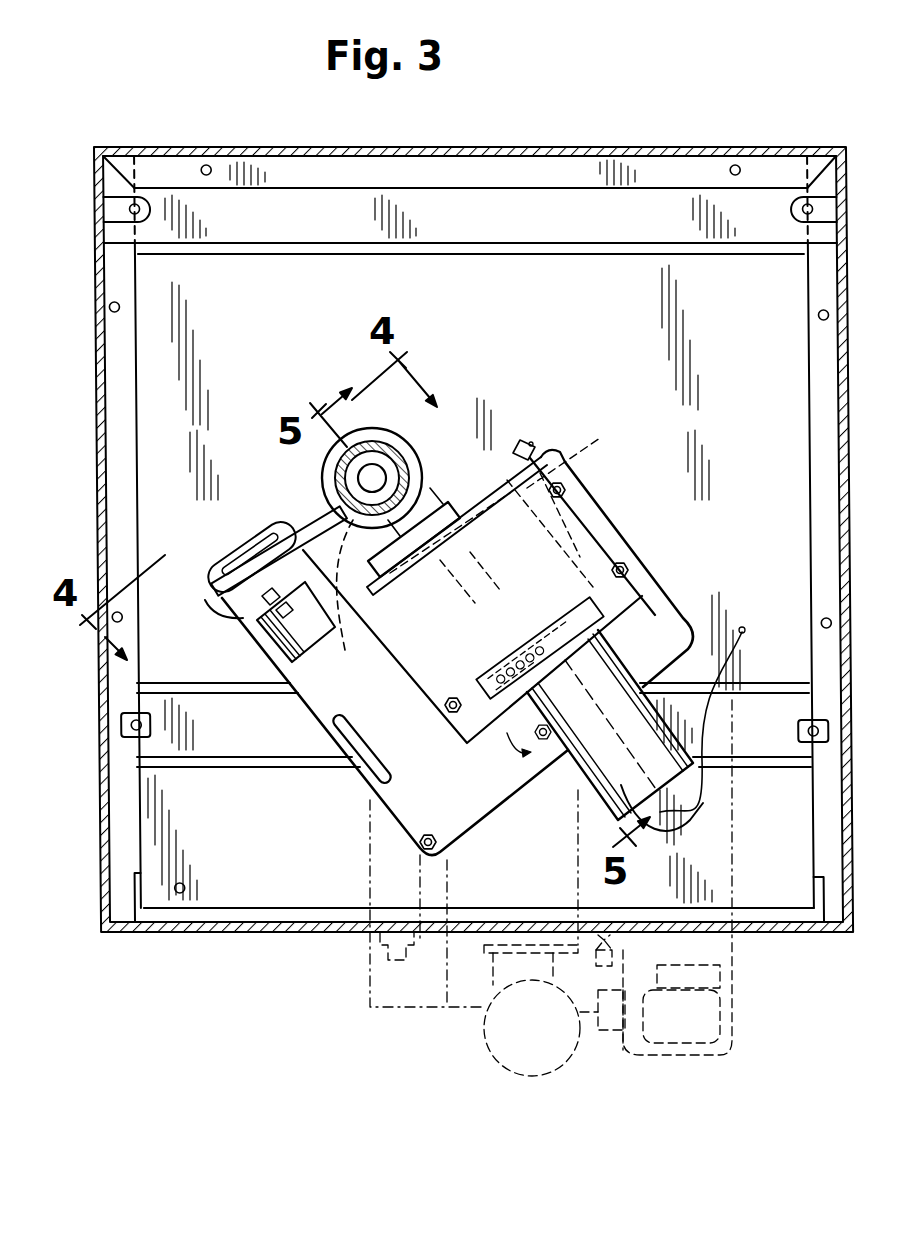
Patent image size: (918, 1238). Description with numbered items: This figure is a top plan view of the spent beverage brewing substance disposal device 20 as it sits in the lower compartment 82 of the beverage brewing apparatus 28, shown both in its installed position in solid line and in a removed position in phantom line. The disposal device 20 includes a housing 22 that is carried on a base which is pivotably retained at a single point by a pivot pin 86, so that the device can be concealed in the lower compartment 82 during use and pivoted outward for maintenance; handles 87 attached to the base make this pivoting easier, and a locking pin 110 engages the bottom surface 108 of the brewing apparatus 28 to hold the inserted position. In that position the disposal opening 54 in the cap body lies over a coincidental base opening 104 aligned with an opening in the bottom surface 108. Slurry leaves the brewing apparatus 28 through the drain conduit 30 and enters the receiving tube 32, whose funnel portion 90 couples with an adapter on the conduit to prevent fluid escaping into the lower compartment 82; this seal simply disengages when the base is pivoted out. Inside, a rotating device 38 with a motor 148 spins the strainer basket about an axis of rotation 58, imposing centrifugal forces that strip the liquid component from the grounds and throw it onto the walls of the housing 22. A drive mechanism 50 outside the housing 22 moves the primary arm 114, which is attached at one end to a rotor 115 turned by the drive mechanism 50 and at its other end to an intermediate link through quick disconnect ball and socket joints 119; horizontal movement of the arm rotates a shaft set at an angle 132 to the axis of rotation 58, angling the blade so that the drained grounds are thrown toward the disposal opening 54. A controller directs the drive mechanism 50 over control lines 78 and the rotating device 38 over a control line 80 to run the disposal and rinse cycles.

The disposal device 20 is at (660, 603).
The housing 22 is at (585, 515).
The beverage brewing apparatus 28 is at (88, 845).
The drain conduit 30 is at (400, 455).
The receiving tube 32 is at (440, 500).
The rotating device 38 is at (595, 831).
The drive mechanism 50 is at (277, 628).
The disposal opening 54 is at (311, 622).
The axis of rotation 58 is at (692, 822).
The control lines 78 is at (250, 672).
The control line 80 is at (740, 640).
The lower compartment 82 is at (323, 888).
The pivot pin 86 is at (545, 740).
The handles 87 is at (240, 555).
The funnel portion 90 is at (328, 460).
The base opening 104 is at (440, 655).
The bottom surface 108 is at (587, 350).
The locking pin 110 is at (442, 845).
The primary arm 114 is at (330, 517).
The rotor 115 is at (270, 613).
The quick disconnect ball and socket joints 119 is at (265, 590).
The angle 132 is at (505, 640).
The motor 148 is at (618, 690).